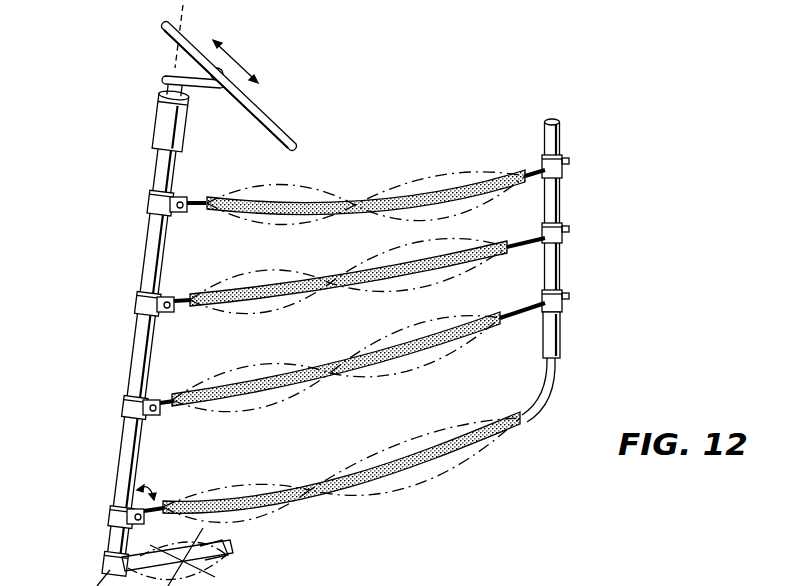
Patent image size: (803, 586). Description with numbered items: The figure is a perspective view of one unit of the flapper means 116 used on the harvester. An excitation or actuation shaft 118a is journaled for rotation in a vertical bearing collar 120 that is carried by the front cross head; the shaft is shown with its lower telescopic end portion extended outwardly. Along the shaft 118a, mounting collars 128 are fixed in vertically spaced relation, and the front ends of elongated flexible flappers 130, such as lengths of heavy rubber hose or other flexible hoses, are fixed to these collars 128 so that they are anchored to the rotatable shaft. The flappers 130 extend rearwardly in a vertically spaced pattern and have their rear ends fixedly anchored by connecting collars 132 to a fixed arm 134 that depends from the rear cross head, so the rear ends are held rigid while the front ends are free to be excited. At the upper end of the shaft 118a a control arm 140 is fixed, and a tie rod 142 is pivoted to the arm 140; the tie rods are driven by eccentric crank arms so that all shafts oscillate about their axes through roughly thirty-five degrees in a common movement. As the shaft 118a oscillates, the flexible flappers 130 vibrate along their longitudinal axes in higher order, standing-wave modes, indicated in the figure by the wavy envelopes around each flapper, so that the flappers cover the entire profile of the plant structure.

The flapper means 116 is at (562, 338).
The excitation shaft 118a is at (120, 460).
The vertical bearing collar 120 is at (186, 128).
The mounting collar 128 is at (148, 210).
The elongated flexible flapper 130 is at (374, 200).
The connecting collar 132 is at (558, 240).
The fixed arm 134 is at (555, 198).
The control arm 140 is at (173, 75).
The tie rod 142 is at (166, 26).